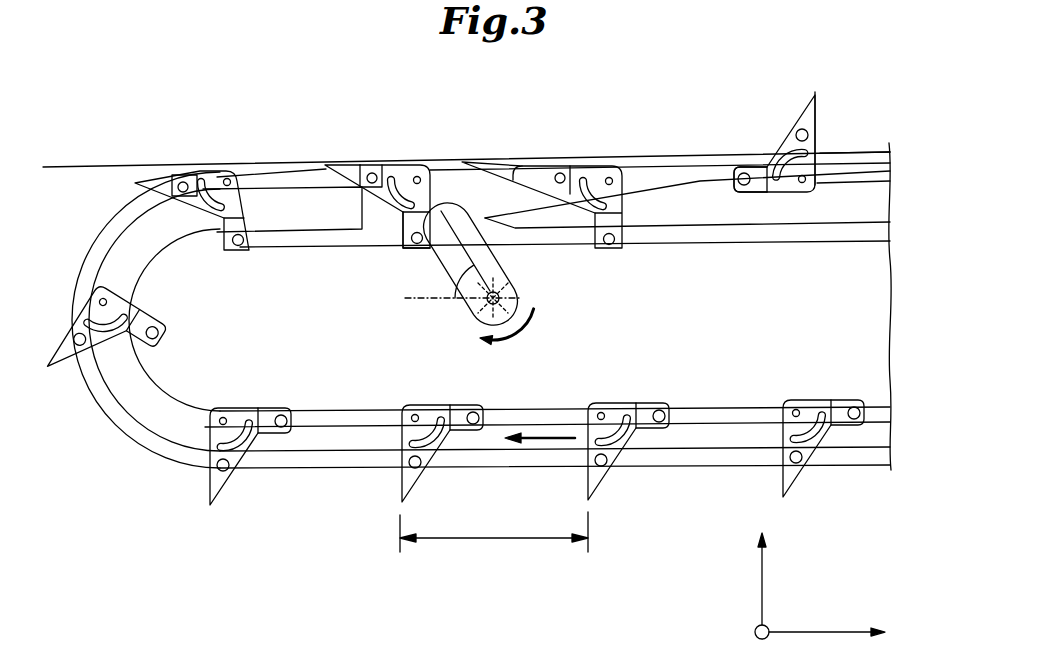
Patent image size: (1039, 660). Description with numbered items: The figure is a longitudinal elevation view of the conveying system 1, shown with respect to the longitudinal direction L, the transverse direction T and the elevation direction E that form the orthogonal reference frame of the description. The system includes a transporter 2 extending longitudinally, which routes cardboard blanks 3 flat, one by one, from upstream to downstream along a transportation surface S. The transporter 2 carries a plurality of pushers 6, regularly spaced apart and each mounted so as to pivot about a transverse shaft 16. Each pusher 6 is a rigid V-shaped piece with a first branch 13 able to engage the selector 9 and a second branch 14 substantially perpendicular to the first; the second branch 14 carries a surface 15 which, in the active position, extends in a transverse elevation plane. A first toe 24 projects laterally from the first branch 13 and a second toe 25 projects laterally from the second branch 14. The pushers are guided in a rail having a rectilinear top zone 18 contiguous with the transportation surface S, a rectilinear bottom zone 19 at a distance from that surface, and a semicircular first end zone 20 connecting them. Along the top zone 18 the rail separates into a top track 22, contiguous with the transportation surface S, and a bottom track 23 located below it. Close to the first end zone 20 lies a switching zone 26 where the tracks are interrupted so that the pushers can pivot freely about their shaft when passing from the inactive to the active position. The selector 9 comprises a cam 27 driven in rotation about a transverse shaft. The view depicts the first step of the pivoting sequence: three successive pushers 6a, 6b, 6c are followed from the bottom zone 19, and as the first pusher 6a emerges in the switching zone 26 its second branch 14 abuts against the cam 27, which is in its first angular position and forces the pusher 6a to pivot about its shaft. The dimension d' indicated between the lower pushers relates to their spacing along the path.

The conveying system 1 is at (163, 115).
The transporter 2 is at (68, 213).
The cardboard blanks 3 is at (858, 150).
The pusher 6 is at (790, 483).
The first pusher 6a is at (410, 168).
The second pusher 6b is at (195, 170).
The third pusher 6c is at (155, 310).
The selector 9 is at (520, 306).
The first branch 13 is at (408, 222).
The second branch 14 is at (330, 165).
The surface 15 is at (818, 125).
The transverse shaft 16 is at (603, 417).
The top zone 18 is at (866, 233).
The bottom zone 19 is at (748, 445).
The first end zone 20 is at (173, 387).
The top track 22 is at (705, 180).
The bottom track 23 is at (835, 230).
The first toe 24 is at (243, 250).
The second toe 25 is at (183, 184).
The switching zone 26 is at (487, 198).
The cam 27 is at (526, 279).
The transportation surface S is at (651, 157).
The pitch d' is at (494, 530).
The elevation direction E is at (770, 576).
The transverse direction T is at (772, 619).
The longitudinal direction L is at (831, 619).